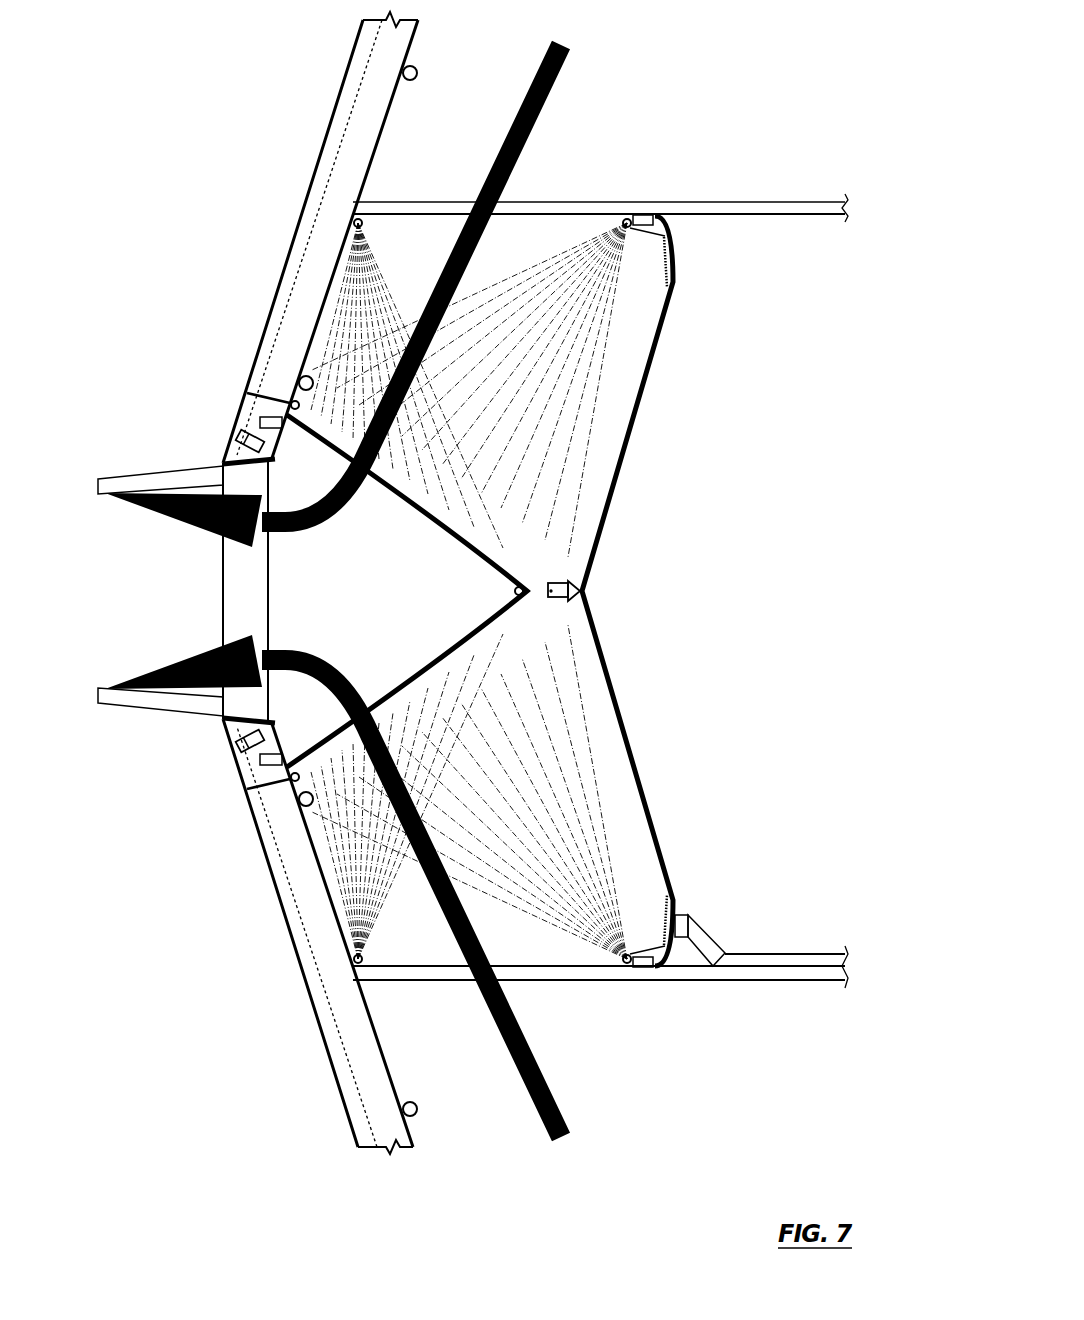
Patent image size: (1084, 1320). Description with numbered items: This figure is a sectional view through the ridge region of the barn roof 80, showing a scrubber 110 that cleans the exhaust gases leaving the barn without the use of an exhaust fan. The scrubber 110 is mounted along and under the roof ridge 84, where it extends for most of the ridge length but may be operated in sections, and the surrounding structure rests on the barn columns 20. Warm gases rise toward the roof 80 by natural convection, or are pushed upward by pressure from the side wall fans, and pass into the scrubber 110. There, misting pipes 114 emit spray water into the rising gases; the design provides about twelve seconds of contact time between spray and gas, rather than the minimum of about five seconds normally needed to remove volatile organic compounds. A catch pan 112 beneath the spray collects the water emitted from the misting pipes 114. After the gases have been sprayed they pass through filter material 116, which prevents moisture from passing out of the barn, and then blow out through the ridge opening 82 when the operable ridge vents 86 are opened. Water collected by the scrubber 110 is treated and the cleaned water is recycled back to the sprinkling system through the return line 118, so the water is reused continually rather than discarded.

The columns 20 is at (725, 204).
The roof 80 is at (312, 232).
The ridge opening 82 is at (222, 590).
The roof ridge 84 is at (243, 478).
The operable ridge vents 86 is at (150, 478).
The scrubber 110 is at (820, 603).
The catch pan 112 is at (610, 688).
The misting pipes 114 is at (360, 216).
The filter material 116 is at (417, 685).
The return line 118 is at (710, 932).